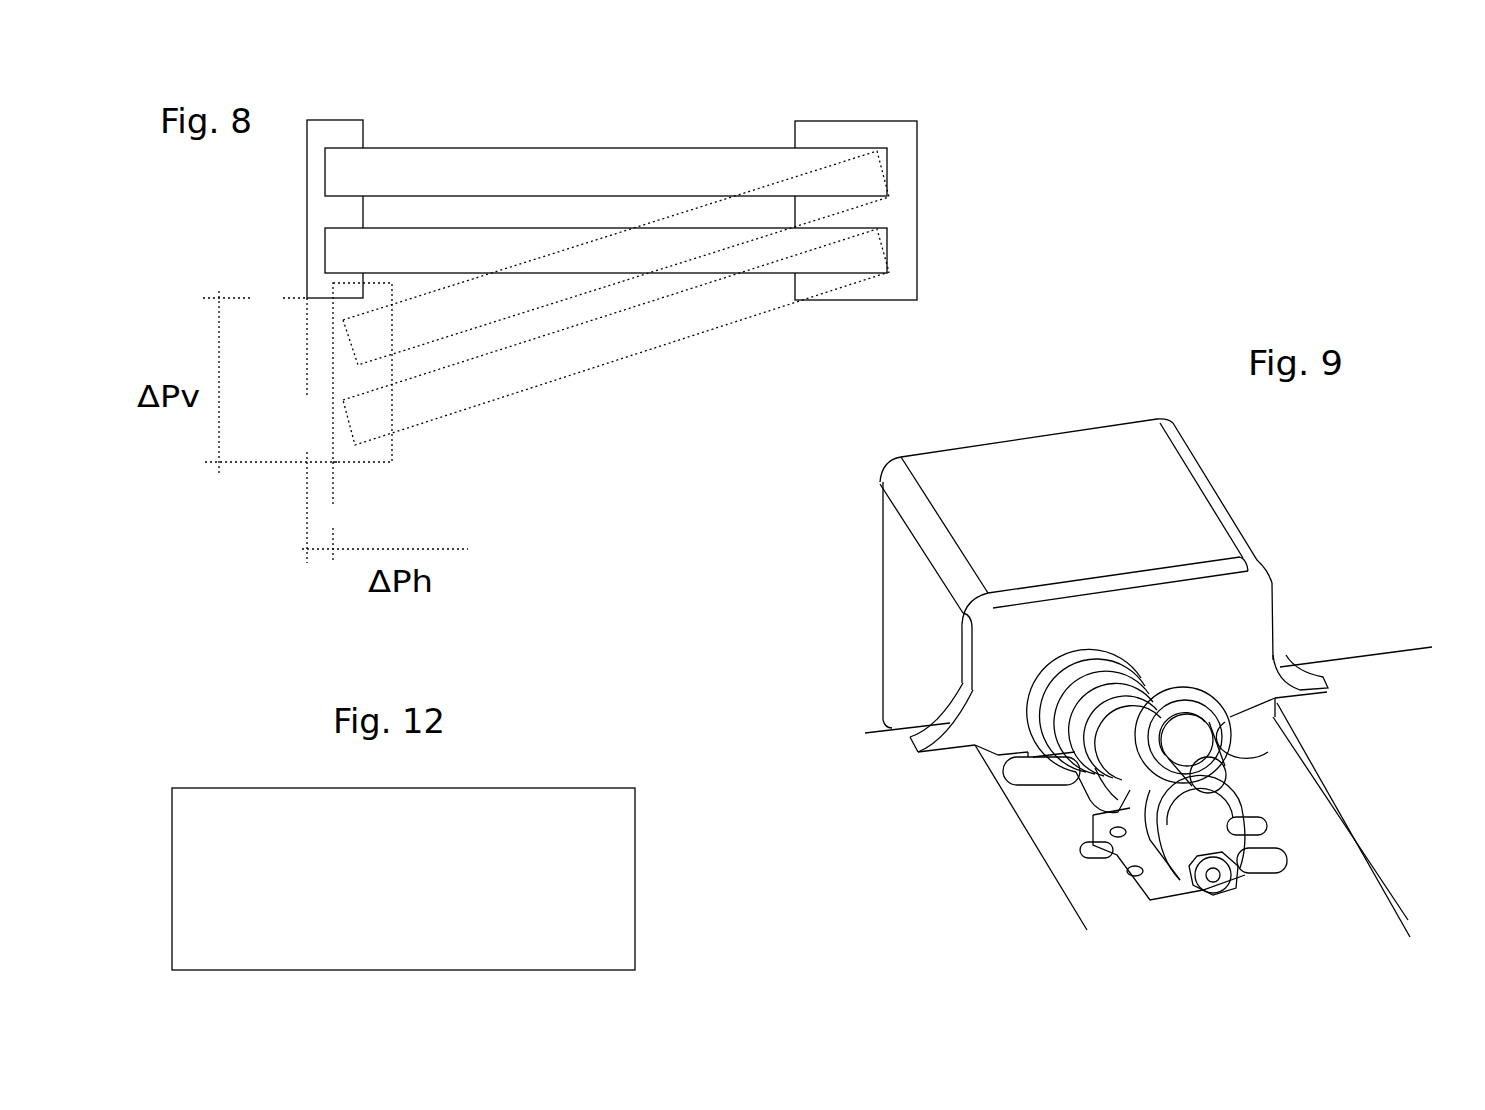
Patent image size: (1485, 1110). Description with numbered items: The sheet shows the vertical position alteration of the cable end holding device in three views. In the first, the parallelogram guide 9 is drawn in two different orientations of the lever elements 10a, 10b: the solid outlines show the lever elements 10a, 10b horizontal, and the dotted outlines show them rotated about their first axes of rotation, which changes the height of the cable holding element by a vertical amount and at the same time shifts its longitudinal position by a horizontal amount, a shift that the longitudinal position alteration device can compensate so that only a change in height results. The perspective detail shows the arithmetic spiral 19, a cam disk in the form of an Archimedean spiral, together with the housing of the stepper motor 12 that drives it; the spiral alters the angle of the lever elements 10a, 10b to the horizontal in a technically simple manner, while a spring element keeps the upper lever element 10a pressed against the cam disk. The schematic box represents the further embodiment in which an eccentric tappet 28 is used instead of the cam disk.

In FIG. 8, the parallelogram guide 9 is at (611, 424).
In FIG. 8, the upper lever element 10a is at (635, 150).
In FIG. 8, the lever element 10b is at (460, 228).
In FIG. 9, the stepper motor 12 is at (1190, 523).
In FIG. 9, the arithmetic spiral 19 is at (975, 852).
In FIG. 12, the eccentric tappet 28 is at (403, 879).